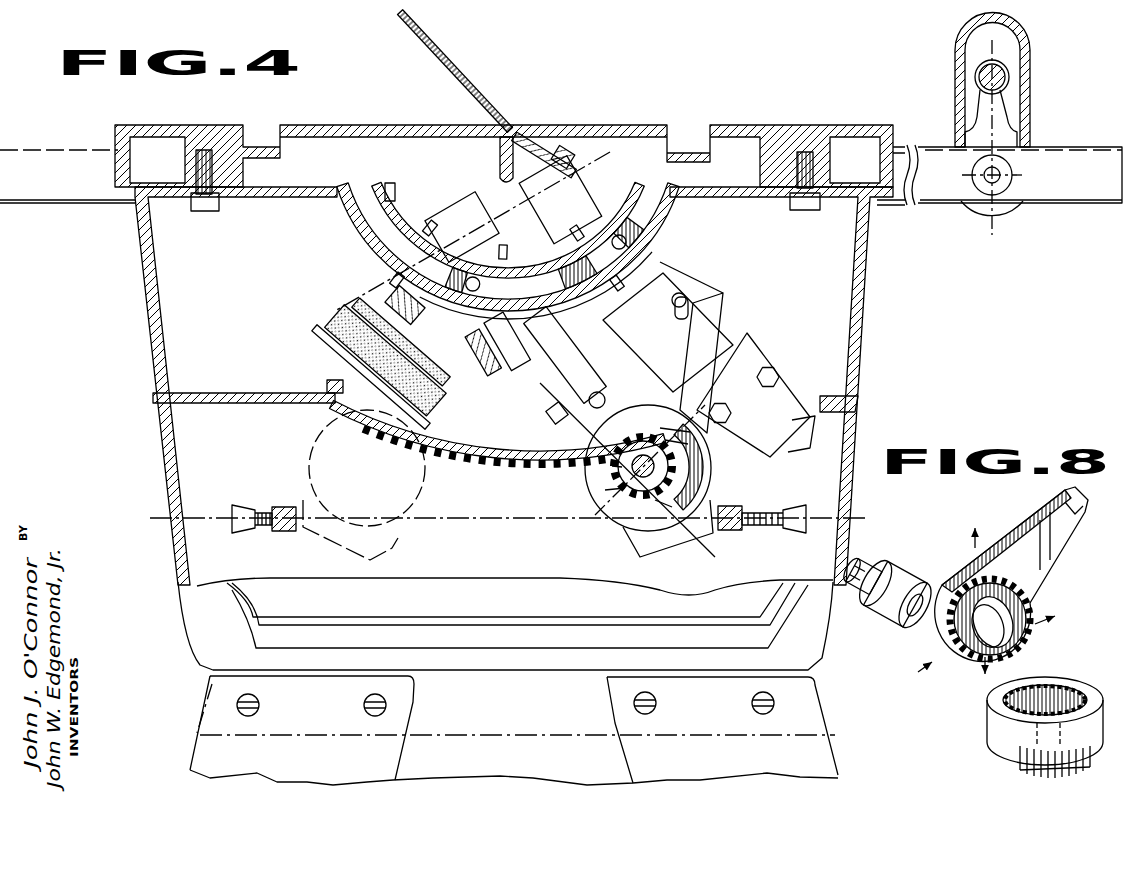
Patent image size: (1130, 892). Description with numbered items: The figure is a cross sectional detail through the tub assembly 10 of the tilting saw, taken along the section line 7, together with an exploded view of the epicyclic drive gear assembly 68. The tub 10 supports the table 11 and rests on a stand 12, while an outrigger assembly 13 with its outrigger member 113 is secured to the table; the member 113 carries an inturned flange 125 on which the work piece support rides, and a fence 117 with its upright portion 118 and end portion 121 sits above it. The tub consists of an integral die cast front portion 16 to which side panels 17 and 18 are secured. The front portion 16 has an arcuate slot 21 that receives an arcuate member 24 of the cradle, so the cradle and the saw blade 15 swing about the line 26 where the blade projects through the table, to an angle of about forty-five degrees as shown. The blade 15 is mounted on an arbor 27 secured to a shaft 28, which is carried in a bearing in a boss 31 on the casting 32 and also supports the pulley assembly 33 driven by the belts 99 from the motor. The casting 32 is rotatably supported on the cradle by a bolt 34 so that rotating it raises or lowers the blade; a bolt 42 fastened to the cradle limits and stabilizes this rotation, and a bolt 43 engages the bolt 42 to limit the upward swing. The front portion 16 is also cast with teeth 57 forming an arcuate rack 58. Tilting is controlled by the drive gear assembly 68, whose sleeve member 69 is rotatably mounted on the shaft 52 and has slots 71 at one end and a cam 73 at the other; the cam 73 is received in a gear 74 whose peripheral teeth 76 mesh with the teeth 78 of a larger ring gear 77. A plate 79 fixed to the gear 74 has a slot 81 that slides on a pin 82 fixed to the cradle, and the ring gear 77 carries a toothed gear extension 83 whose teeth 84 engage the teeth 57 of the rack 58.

In FIG. 4, the section line 7- 7 is at (540, 384).
In FIG. 4, the tub assembly 10 is at (140, 358).
In FIG. 4, the table 11 is at (750, 126).
In FIG. 4, the stand 12 is at (195, 750).
In FIG. 4, the outrigger assembly 13 is at (905, 142).
In FIG. 4, the saw blade 15 is at (440, 48).
In FIG. 4, the front portion 16 is at (212, 620).
In FIG. 4, the side panel 17 is at (152, 404).
In FIG. 4, the side panel 18 is at (866, 335).
In FIG. 4, the arcuate slot 21 is at (372, 228).
In FIG. 4, the arcuate member 24 is at (660, 217).
In FIG. 4, the line 26 is at (515, 128).
In FIG. 4, the arbor 27 is at (558, 130).
In FIG. 4, the shaft 28 is at (576, 164).
In FIG. 4, the boss 31 is at (470, 206).
In FIG. 4, the casting 32 is at (520, 362).
In FIG. 4, the pulley assembly 33 is at (332, 345).
In FIG. 4, the bolt 34 is at (480, 356).
In FIG. 4, the bolt 42 is at (556, 416).
In FIG. 4, the bolt 43 is at (600, 392).
In FIG. 4, the shaft 52 is at (616, 478).
In FIG. 4, the teeth 57 is at (508, 465).
In FIG. 4, the arcuate rack 58 is at (475, 465).
In FIG. 4, the drive gear assembly 68 is at (612, 496).
In FIG. 8, the drive gear assembly 68 is at (930, 667).
In FIG. 8, the sleeve member 69 is at (893, 578).
In FIG. 8, the slots 71 is at (860, 576).
In FIG. 8, the cam 73 is at (920, 585).
In FIG. 4, the gear 74 is at (705, 473).
In FIG. 8, the gear 74 is at (978, 657).
In FIG. 4, the teeth 76 is at (645, 508).
In FIG. 8, the teeth 76 is at (1012, 597).
In FIG. 4, the ring gear 77 is at (700, 488).
In FIG. 8, the ring gear 77 is at (990, 735).
In FIG. 4, the teeth 78 is at (658, 522).
In FIG. 8, the teeth 78 is at (1050, 690).
In FIG. 4, the plate 79 is at (688, 347).
In FIG. 8, the plate 79 is at (1050, 568).
In FIG. 4, the slot 81 is at (690, 302).
In FIG. 8, the slot 81 is at (1080, 514).
In FIG. 4, the pin 82 is at (688, 293).
In FIG. 4, the toothed gear extension 83 is at (690, 456).
In FIG. 8, the toothed gear extension 83 is at (1020, 765).
In FIG. 4, the teeth 84 is at (592, 472).
In FIG. 8, the teeth 84 is at (1040, 772).
In FIG. 4, the belts 99 is at (336, 316).
In FIG. 4, the outrigger member 113 is at (78, 150).
In FIG. 4, the fence 117 is at (1030, 124).
In FIG. 4, the upright portion 118 is at (1020, 92).
In FIG. 4, the end portion 121 is at (1032, 62).
In FIG. 4, the inturned flange 125 is at (54, 200).